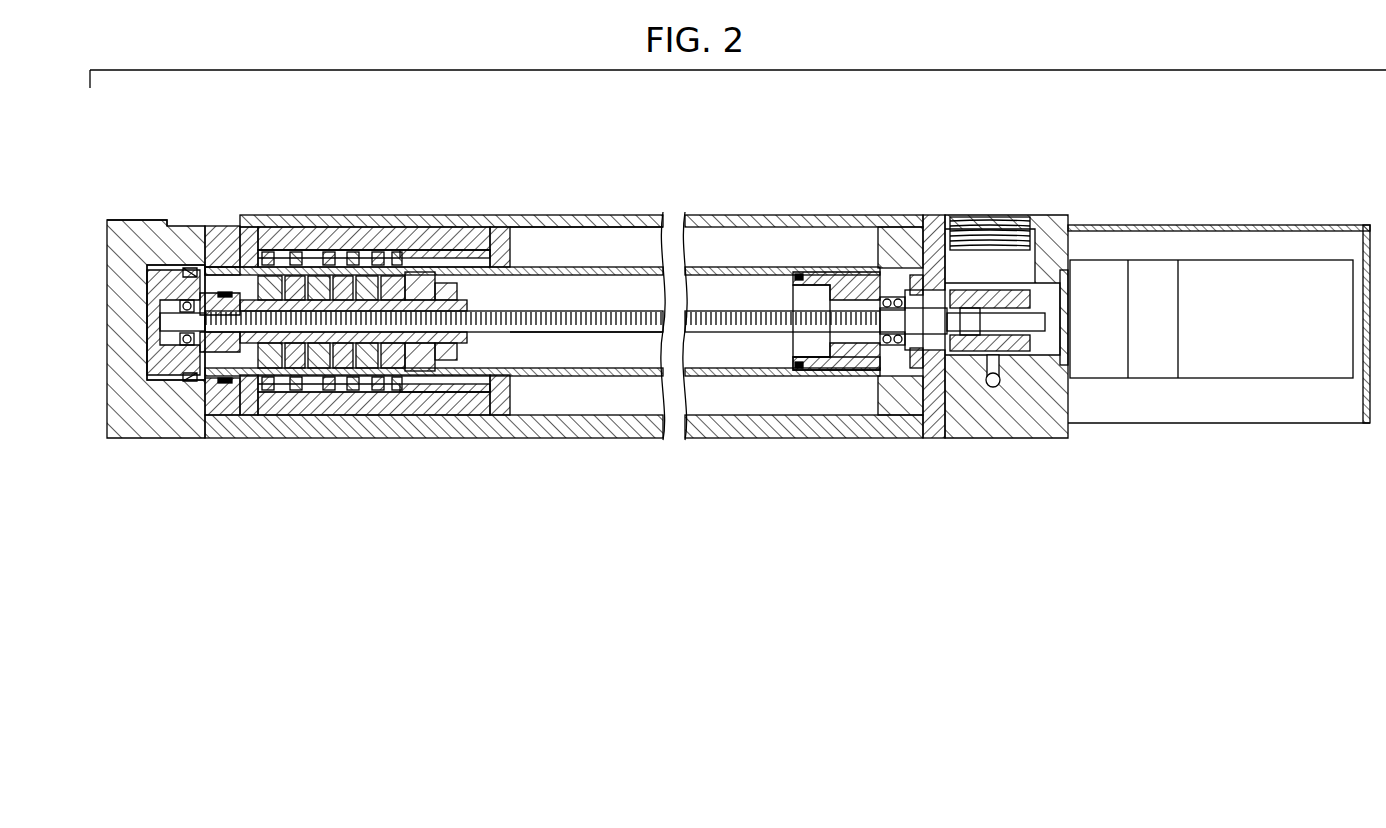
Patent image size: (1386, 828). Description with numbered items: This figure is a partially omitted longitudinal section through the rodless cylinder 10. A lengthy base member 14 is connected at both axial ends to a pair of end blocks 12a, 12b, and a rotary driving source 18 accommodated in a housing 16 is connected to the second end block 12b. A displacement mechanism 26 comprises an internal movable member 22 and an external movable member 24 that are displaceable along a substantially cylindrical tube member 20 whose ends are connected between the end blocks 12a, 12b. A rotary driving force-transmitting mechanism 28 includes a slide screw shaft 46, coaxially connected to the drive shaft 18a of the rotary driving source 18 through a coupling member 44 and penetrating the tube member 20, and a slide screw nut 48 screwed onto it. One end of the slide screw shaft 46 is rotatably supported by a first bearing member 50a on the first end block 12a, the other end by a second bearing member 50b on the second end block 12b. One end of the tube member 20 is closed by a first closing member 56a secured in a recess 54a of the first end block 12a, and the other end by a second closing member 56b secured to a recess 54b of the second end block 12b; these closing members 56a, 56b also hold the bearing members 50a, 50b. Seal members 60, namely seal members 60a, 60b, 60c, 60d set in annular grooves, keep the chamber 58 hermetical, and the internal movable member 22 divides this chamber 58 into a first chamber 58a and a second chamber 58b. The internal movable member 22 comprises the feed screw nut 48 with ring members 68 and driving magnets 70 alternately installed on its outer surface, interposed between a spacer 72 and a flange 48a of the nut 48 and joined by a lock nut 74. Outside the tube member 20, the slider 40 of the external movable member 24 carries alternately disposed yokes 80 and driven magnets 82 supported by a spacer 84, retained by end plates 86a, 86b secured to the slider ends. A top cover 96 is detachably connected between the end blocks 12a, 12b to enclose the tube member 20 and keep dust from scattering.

The rodless cylinder 10 is at (998, 117).
The first end block 12a is at (155, 422).
The second end block 12b is at (977, 427).
The base member 14 is at (548, 440).
The housing 16 is at (1205, 224).
The rotary driving source 18 is at (1213, 368).
The drive shaft 18a is at (1045, 340).
The tube member 20 is at (730, 374).
The internal movable member 22 is at (375, 250).
The external movable member 24 is at (405, 252).
The displacement mechanism 26 is at (435, 162).
The rotary driving force-transmitting mechanism 28 is at (706, 308).
The slider 40 is at (453, 240).
The coupling member 44 is at (977, 290).
The slide screw shaft 46 is at (563, 335).
The slide screw nut 48 is at (390, 345).
The flange 48a is at (250, 383).
The first bearing member 50a is at (178, 298).
The second bearing member 50b is at (900, 350).
The recess 54a is at (122, 219).
The recess 54b is at (913, 262).
The first closing member 56a is at (150, 372).
The second closing member 56b is at (855, 282).
The chamber 58 is at (583, 305).
The first chamber 58a is at (220, 295).
The second chamber 58b is at (623, 353).
The seal members 60 is at (1035, 243).
The seal member 60a is at (195, 378).
The seal member 60b is at (225, 375).
The seal member 60c is at (803, 368).
The seal member 60d is at (935, 385).
The ring members 68 is at (295, 362).
The driving magnets 70 is at (325, 365).
The spacer 72 is at (433, 372).
The lock nut 74 is at (480, 372).
The yokes 80 is at (307, 285).
The driven magnets 82 is at (340, 258).
The spacer 84 is at (478, 242).
The end plate 86a is at (258, 255).
The end plate 86b is at (505, 250).
The top cover 96 is at (640, 214).